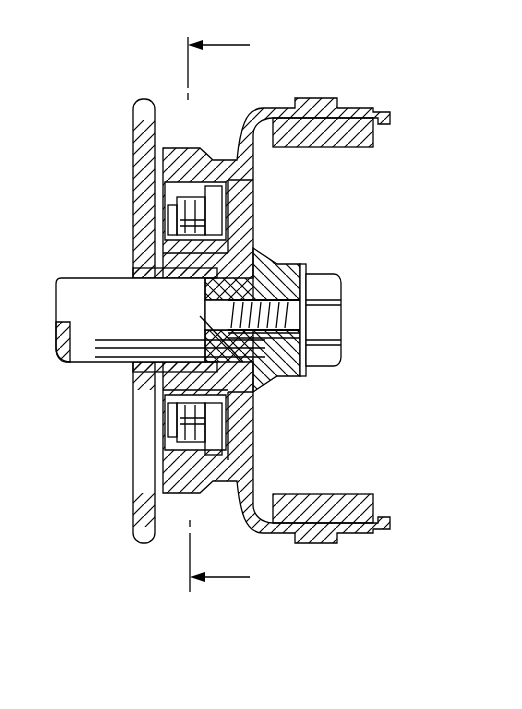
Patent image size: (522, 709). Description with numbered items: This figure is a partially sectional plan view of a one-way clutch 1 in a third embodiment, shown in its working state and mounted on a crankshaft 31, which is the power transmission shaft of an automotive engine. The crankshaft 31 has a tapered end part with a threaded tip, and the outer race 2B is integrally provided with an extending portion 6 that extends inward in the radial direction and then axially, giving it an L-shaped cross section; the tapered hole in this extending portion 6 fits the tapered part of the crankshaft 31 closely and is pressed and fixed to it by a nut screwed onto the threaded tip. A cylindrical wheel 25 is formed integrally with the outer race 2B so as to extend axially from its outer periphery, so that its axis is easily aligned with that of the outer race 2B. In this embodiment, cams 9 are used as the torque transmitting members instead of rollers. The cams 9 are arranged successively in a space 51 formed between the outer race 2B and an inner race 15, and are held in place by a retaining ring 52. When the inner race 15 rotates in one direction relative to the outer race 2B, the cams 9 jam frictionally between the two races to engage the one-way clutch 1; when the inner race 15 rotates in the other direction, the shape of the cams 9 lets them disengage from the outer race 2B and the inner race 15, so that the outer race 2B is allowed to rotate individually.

The one-way clutch 1 is at (412, 108).
The outer race 2B is at (201, 148).
The cylindrical wheel 25 is at (318, 95).
The extending portion 6 is at (273, 380).
The cams 9 is at (197, 423).
The space 51 is at (230, 236).
The retaining ring 52 is at (175, 215).
The inner race 15 is at (257, 233).
The crankshaft 31 is at (100, 364).